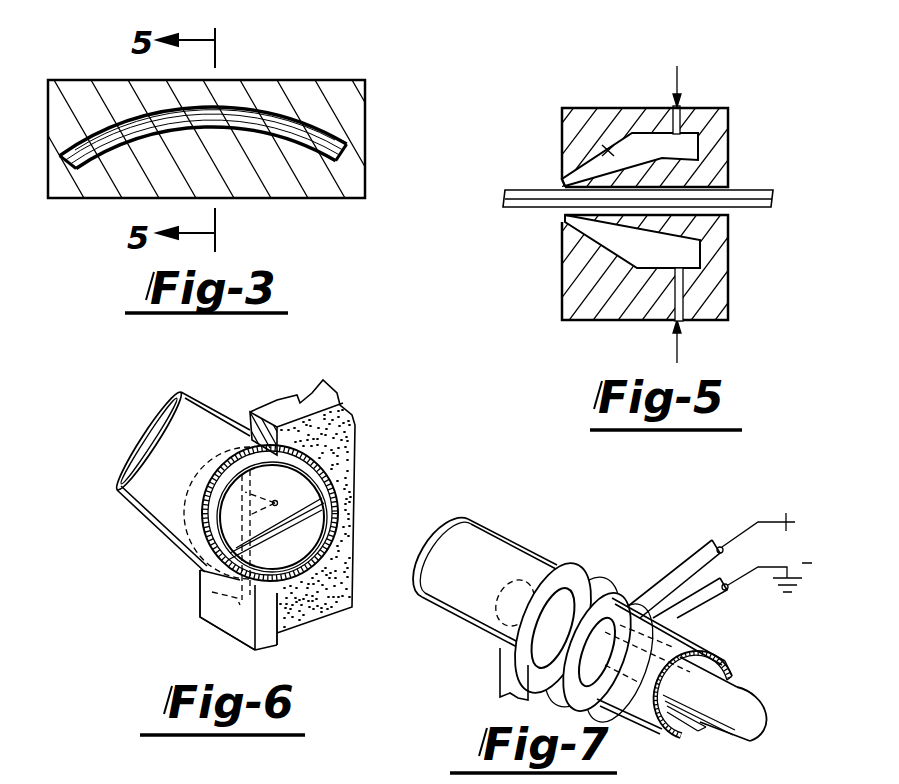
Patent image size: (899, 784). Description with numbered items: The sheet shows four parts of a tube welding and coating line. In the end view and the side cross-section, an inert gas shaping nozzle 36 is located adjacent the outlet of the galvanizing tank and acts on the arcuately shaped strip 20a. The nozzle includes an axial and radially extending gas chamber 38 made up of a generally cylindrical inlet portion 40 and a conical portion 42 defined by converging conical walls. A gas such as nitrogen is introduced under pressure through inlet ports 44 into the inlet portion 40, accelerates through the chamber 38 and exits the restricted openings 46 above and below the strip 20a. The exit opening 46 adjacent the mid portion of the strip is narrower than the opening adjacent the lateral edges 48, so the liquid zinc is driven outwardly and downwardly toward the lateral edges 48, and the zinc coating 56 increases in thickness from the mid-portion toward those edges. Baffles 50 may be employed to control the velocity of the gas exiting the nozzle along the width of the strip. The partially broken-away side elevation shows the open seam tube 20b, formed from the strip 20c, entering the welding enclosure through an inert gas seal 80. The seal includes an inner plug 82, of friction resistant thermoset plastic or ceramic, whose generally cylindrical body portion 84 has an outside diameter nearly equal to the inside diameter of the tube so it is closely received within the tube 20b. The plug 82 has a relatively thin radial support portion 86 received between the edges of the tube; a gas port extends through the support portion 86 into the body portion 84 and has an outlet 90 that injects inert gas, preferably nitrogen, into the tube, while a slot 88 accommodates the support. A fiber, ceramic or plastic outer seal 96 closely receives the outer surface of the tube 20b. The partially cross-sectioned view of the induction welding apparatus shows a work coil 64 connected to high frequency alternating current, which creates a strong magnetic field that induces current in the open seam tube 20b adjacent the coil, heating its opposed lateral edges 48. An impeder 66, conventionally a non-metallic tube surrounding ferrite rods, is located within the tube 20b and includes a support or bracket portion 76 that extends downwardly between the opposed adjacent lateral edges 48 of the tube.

In FIG. 3, the gas shaping nozzle 36 is at (303, 72).
In FIG. 3, the baffles 50 is at (128, 117).
In FIG. 3, the lateral edges 48 is at (65, 160).
In FIG. 3, the zinc coating 56 is at (340, 150).
In FIG. 3, the arcuately shaped strip 20a is at (252, 125).
In FIG. 5, the arcuately shaped strip 20a is at (752, 191).
In FIG. 5, the gas chamber 38 is at (608, 150).
In FIG. 5, the cylindrical inlet portion 40 is at (683, 145).
In FIG. 5, the conical portion 42 is at (610, 240).
In FIG. 5, the inlet ports 44 is at (685, 302).
In FIG. 5, the restricted openings 46 is at (563, 180).
In FIG. 6, the inert gas seal 80 is at (354, 495).
In FIG. 6, the inner plug 82 is at (312, 529).
In FIG. 6, the body portion 84 is at (290, 548).
In FIG. 6, the radial support portion 86 is at (238, 622).
In FIG. 6, the slot 88 is at (205, 603).
In FIG. 6, the outlet 90 is at (276, 500).
In FIG. 6, the outer seal 96 is at (333, 457).
In FIG. 6, the open seam tube 20b is at (157, 513).
In FIG. 7, the open seam tube 20b is at (497, 580).
In FIG. 6, the strip 20c is at (276, 627).
In FIG. 7, the work coil 64 is at (682, 567).
In FIG. 7, the impeder 66 is at (735, 697).
In FIG. 7, the bracket portion 76 is at (517, 677).